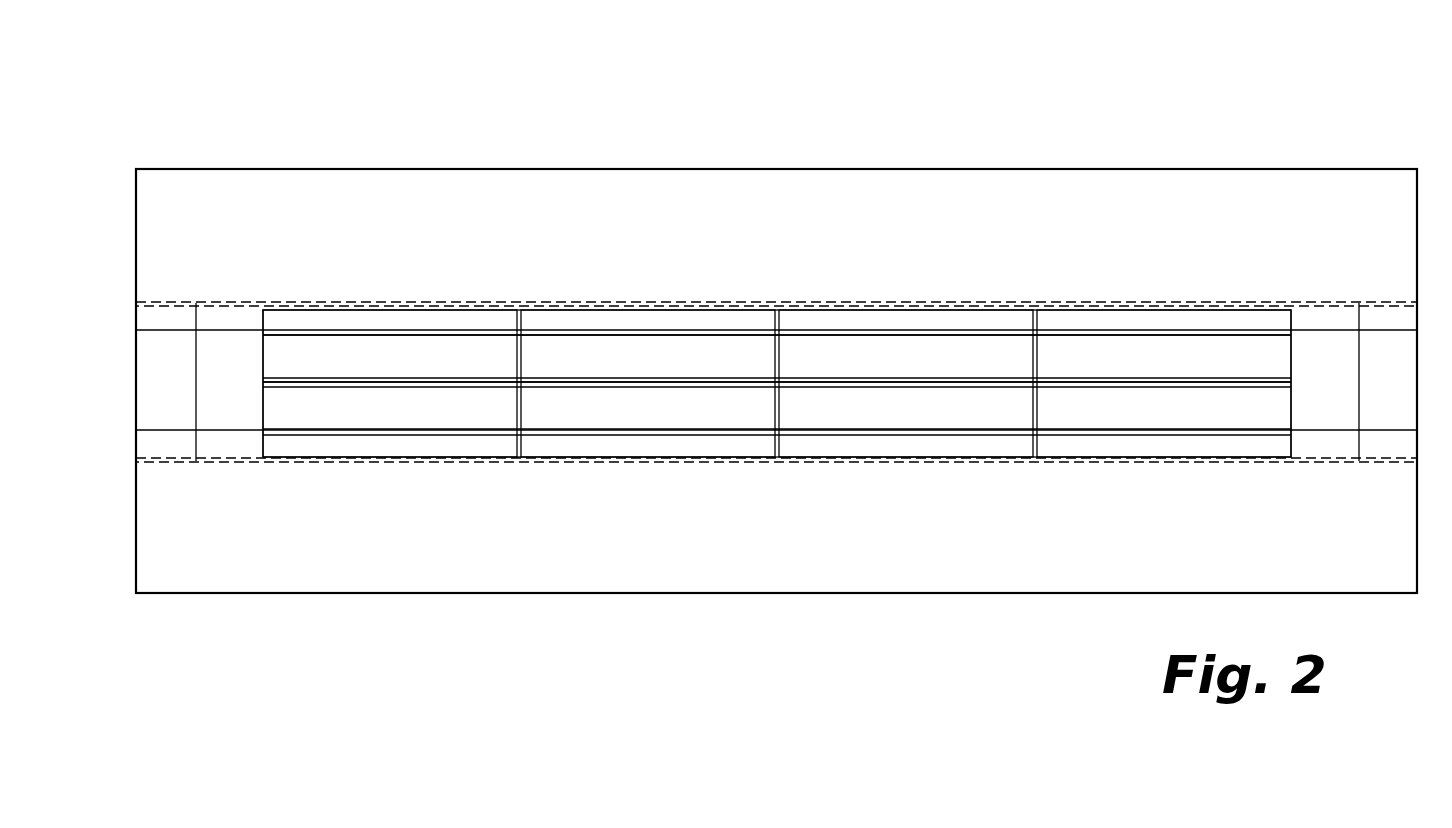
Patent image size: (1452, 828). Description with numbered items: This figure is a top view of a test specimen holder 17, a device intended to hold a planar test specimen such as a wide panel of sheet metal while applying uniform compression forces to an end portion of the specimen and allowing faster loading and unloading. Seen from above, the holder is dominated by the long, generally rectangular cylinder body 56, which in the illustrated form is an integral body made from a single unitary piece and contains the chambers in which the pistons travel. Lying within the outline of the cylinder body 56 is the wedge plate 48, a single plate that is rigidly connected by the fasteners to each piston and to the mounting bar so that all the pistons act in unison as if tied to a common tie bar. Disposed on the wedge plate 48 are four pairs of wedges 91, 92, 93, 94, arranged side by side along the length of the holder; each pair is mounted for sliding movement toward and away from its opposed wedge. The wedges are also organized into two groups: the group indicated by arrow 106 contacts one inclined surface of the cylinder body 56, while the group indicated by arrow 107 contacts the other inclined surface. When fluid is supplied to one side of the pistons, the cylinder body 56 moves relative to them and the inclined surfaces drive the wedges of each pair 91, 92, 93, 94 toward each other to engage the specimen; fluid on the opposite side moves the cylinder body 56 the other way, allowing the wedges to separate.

The test specimen holder 17 is at (1376, 150).
The wedge plate 48 is at (1323, 370).
The cylinder body 56 is at (322, 522).
The pair of wedges 91 is at (398, 317).
The pair of wedges 92 is at (665, 317).
The pair of wedges 93 is at (933, 320).
The pair of wedges 94 is at (1125, 320).
The group of wedges 106 is at (1313, 417).
The group of wedges 107 is at (1305, 347).